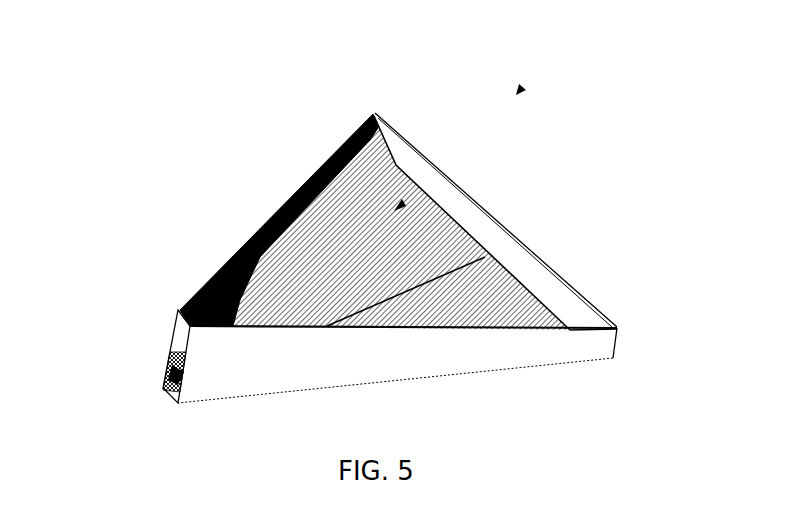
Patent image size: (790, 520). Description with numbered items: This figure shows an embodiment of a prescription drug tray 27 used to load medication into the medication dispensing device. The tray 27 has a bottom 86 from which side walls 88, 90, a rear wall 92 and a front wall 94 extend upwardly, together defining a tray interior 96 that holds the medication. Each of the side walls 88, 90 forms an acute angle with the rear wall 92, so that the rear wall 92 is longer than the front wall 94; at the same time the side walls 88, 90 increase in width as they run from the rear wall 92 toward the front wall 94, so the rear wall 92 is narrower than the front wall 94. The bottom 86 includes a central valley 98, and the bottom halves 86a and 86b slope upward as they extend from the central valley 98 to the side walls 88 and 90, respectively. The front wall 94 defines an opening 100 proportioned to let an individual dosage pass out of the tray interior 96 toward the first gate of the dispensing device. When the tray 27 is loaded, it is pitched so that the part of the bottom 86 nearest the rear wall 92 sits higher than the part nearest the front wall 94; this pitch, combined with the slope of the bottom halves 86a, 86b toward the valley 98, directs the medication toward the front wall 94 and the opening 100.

The tray 27 is at (520, 88).
The bottom 86 is at (435, 237).
The bottom half 86a is at (335, 218).
The bottom half 86b is at (465, 318).
The side wall 88 is at (254, 238).
The side wall 90 is at (334, 379).
The rear wall 92 is at (540, 284).
The front wall 94 is at (172, 335).
The tray interior 96 is at (402, 204).
The central valley 98 is at (447, 273).
The opening 100 is at (163, 388).